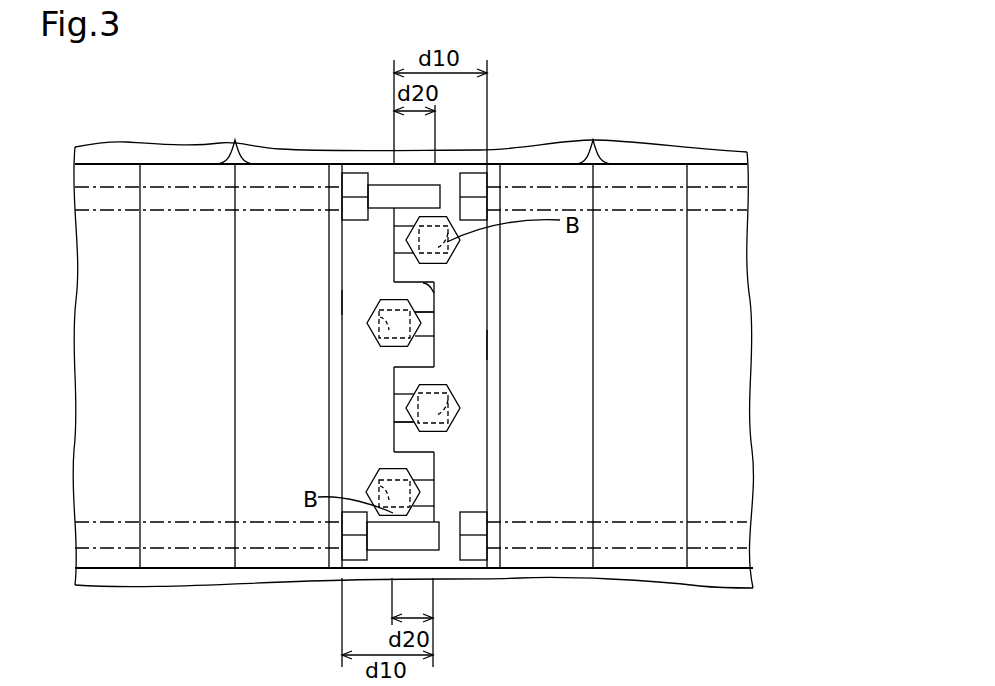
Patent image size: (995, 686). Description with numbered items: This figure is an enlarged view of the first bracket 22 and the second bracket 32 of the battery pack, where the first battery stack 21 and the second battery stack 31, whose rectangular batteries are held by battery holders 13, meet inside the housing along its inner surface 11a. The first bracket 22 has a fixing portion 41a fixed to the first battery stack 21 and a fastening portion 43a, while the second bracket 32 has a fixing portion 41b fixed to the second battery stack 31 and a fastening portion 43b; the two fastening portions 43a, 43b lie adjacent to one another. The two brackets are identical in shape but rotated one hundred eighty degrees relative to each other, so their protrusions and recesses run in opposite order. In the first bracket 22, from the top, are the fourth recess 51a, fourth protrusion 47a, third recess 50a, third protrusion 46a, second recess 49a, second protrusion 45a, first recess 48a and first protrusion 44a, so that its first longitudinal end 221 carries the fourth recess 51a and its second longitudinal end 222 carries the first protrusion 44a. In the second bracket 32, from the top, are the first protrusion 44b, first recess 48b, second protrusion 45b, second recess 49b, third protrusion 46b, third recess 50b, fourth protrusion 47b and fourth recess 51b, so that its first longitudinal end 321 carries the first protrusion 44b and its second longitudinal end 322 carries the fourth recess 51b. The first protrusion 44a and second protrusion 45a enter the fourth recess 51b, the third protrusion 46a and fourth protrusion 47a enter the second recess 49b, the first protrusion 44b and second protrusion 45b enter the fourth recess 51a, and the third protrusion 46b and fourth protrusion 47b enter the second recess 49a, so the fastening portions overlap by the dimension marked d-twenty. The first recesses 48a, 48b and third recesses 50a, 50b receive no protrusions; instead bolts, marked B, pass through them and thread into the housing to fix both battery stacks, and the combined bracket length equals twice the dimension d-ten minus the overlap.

The inner surface 11a is at (718, 158).
The first battery stack 21 is at (174, 148).
The second battery stack 31 is at (655, 147).
The battery holder 13 is at (414, 135).
The first bracket 22 is at (347, 163).
The first longitudinal end 221 is at (360, 165).
The second longitudinal end 222 is at (373, 568).
The second bracket 32 is at (500, 437).
The first longitudinal end 321 is at (452, 163).
The second longitudinal end 322 is at (477, 568).
The fixing portion 41a is at (325, 288).
The fixing portion 41b is at (495, 268).
The fastening portion 43a is at (352, 301).
The fastening portion 43b is at (478, 347).
The first protrusion 44a is at (425, 553).
The first protrusion 44b is at (396, 219).
The second protrusion 45a is at (423, 467).
The second protrusion 45b is at (397, 265).
The third protrusion 46a is at (435, 350).
The third protrusion 46b is at (397, 385).
The fourth protrusion 47a is at (425, 302).
The fourth protrusion 47b is at (397, 433).
The first recess 48a is at (368, 484).
The first recess 48b is at (447, 248).
The second recess 49a is at (399, 368).
The second recess 49b is at (434, 293).
The third recess 50a is at (367, 328).
The third recess 50b is at (462, 405).
The fourth recess 51a is at (400, 176).
The fourth recess 51b is at (427, 492).